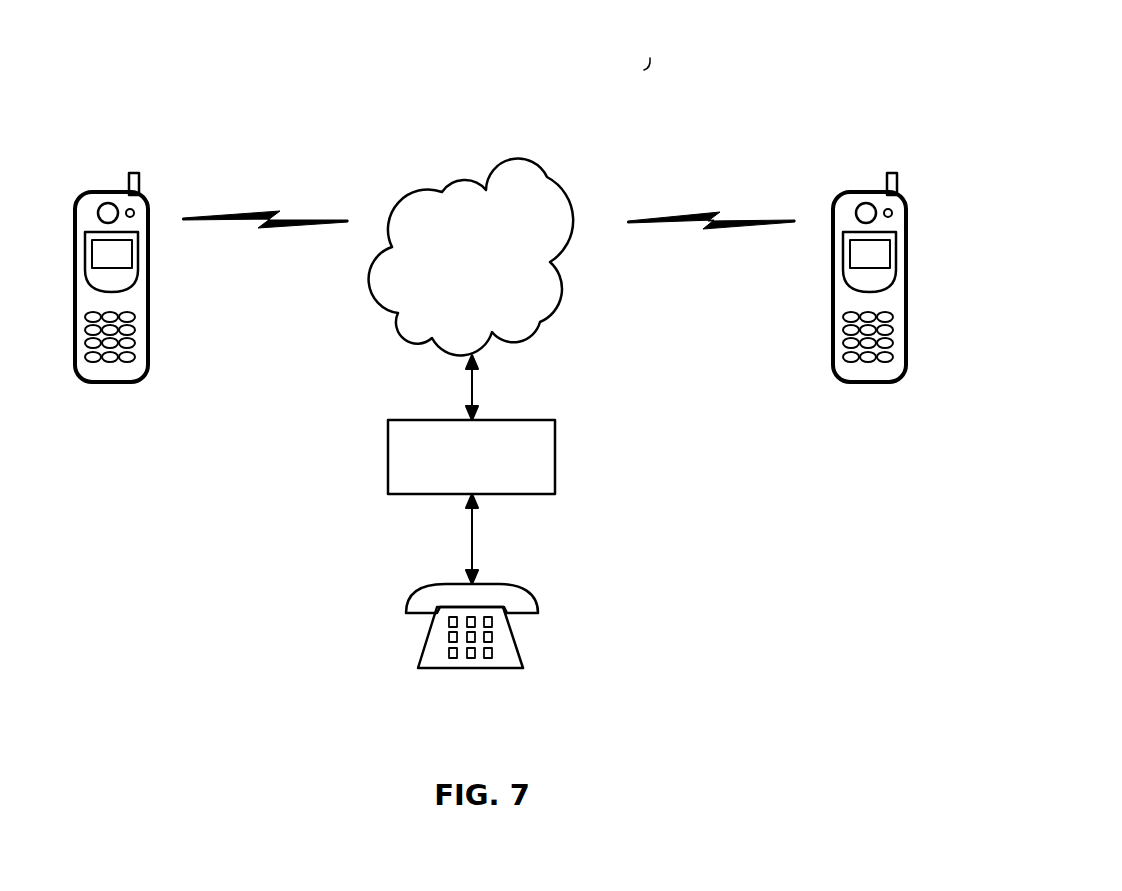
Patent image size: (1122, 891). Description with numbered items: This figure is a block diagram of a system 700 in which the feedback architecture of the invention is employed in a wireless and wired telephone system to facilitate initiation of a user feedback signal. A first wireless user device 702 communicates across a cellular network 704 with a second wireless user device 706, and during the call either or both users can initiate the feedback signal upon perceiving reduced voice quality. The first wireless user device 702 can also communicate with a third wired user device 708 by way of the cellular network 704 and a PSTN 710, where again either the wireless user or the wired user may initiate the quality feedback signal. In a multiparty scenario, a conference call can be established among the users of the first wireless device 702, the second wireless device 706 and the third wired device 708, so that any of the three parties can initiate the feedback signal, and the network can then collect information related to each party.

The system 700 is at (699, 37).
The first wireless user device 702 is at (148, 320).
The cellular network 704 is at (522, 158).
The second wireless user device 706 is at (833, 323).
The third wired user device 708 is at (518, 643).
The PSTN (Public Switch Telephone Network) 710 is at (555, 457).